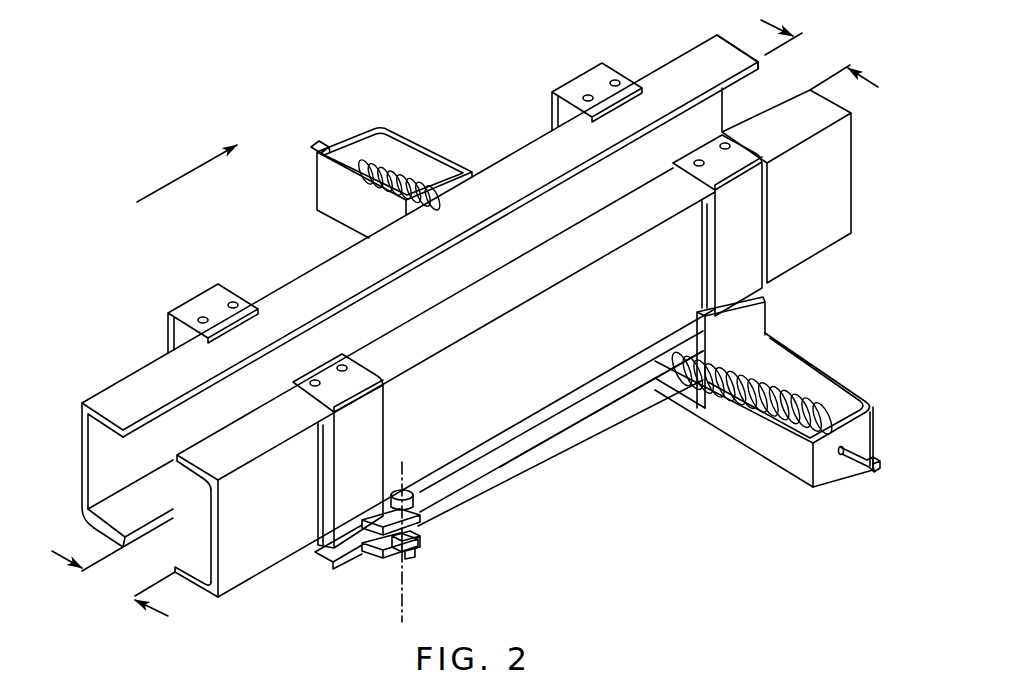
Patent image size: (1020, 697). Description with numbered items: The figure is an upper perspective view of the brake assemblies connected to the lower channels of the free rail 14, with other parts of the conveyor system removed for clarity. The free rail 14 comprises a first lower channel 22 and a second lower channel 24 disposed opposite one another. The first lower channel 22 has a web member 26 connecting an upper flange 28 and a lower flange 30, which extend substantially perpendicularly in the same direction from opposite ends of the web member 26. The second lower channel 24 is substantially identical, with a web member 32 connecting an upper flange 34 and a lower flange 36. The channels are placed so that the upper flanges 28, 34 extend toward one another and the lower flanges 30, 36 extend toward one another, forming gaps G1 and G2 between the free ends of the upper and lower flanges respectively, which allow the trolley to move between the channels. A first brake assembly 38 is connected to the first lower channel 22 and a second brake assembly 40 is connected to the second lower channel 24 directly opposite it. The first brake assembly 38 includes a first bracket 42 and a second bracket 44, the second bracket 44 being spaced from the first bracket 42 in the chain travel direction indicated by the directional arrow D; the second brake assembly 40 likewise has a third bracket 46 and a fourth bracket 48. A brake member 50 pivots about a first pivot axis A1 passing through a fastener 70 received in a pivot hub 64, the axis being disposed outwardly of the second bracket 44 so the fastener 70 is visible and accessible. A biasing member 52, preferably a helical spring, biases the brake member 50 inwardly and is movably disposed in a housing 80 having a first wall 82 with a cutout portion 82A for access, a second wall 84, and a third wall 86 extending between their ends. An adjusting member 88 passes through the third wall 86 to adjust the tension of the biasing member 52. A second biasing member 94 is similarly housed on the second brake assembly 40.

The free rail 14 is at (399, 277).
The first lower channel 22 is at (853, 175).
The second lower channel 24 is at (667, 63).
The web member 26 is at (445, 403).
The upper flange 28 is at (233, 452).
The lower flange 30 is at (200, 570).
The web member 32 is at (112, 453).
The upper flange 34 is at (133, 393).
The lower flange 36 is at (128, 520).
The first brake assembly 38 is at (525, 474).
The second brake assembly 40 is at (391, 147).
The first bracket 42 is at (769, 219).
The second bracket 44 is at (386, 403).
The third bracket 46 is at (563, 74).
The fourth bracket 48 is at (190, 297).
The brake member 50 is at (584, 440).
The biasing member 52 is at (781, 376).
The pivot hub 64 is at (375, 562).
The fastener 70 is at (414, 492).
The housing 80 is at (829, 488).
The first wall 82 is at (781, 425).
The cutout portion 82A is at (683, 397).
The second wall 84 is at (835, 382).
The third wall 86 is at (864, 432).
The adjusting member 88 is at (880, 480).
The second biasing member 94 is at (418, 175).
The directional arrow D is at (176, 181).
The gap G1 is at (819, 55).
The gap G2 is at (113, 581).
The first pivot axis A1 is at (404, 612).